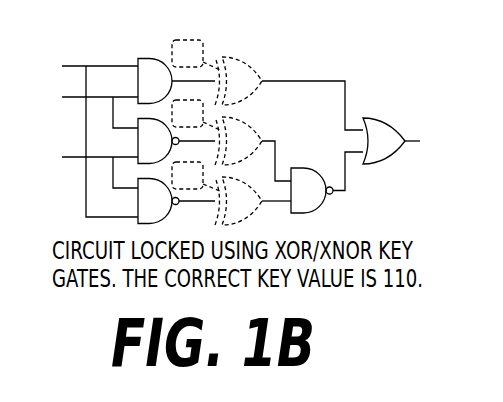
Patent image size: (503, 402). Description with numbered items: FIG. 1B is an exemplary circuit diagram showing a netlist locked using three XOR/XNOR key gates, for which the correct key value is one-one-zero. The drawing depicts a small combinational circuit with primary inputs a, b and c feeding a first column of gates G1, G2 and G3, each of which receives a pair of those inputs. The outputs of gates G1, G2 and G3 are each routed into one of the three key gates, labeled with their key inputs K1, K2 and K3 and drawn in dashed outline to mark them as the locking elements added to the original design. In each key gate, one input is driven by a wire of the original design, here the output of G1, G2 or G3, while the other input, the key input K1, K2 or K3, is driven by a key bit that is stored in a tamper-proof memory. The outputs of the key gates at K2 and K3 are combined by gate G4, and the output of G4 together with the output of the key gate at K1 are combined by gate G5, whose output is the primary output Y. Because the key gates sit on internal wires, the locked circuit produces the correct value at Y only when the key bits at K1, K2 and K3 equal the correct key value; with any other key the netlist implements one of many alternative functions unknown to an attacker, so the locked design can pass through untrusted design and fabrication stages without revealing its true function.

The primary input a is at (91, 137).
The primary input b is at (91, 108).
The primary input c is at (91, 168).
The AND gate G1 is at (176, 81).
The NAND gate G2 is at (176, 141).
The NAND gate G3 is at (176, 201).
The NAND gate G4 is at (327, 182).
The OR gate G5 is at (384, 141).
The XOR/XNOR key gate with key input K1 is at (267, 85).
The XOR/XNOR key gate with key input K2 is at (231, 140).
The XOR/XNOR key gate with key input K3 is at (231, 193).
The primary output Y is at (419, 141).